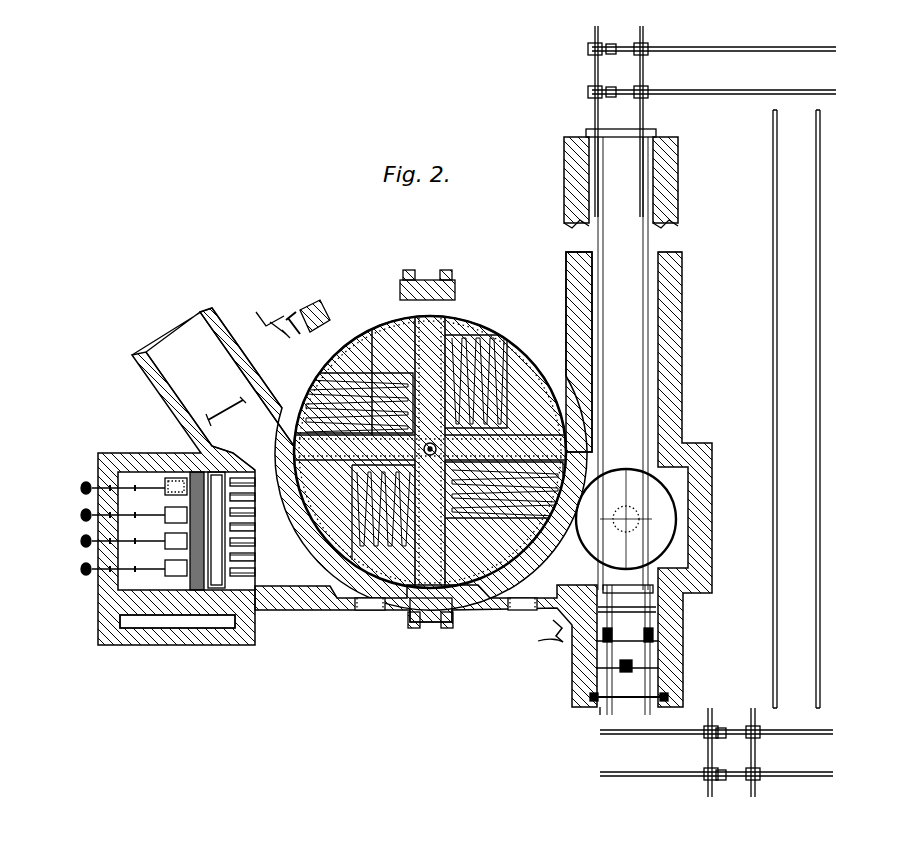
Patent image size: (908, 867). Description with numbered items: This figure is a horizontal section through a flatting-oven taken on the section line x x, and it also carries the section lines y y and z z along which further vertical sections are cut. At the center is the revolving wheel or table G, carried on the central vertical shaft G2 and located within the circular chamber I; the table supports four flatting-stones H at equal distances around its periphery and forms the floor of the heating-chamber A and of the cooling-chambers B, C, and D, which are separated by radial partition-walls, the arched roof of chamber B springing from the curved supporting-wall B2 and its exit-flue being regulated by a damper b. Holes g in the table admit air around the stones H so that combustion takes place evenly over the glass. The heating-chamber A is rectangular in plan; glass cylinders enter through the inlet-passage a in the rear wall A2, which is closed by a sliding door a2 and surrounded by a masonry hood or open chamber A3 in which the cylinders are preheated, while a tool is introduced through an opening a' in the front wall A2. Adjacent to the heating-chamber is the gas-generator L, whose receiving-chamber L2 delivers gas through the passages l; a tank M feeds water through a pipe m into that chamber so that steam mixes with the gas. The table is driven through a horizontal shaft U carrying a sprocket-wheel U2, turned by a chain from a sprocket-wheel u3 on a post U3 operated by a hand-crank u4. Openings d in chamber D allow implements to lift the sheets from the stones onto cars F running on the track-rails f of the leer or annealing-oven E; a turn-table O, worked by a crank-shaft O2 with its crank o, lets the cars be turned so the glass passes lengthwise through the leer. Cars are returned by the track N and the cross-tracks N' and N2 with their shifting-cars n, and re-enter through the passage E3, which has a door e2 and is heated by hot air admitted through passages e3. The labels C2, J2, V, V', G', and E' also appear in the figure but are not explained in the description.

The section line x x is at (860, 519).
The section line z z is at (369, 670).
The section line y y is at (611, 749).
The housing casing wall C2 is at (500, 318).
The cooling-chamber C is at (528, 332).
The circular chamber I is at (516, 548).
The cooling-chamber D is at (556, 536).
The flange J2 is at (436, 622).
The valve block V is at (403, 265).
The valve block V' is at (435, 452).
The wall of the heating-chamber A2 is at (290, 458).
The opening a' is at (361, 623).
The openings d is at (508, 612).
The heating-chamber A is at (193, 498).
The hood or open chamber A3 is at (213, 377).
The inlet-passage a is at (235, 451).
The sliding door a2 is at (226, 409).
The passages l is at (252, 548).
The pipe m is at (210, 530).
The damper b is at (196, 531).
The tank M is at (214, 590).
The shaft U is at (165, 492).
The sprocket-wheel U2 is at (176, 541).
The receiving-chamber L2 is at (128, 528).
The gas-generator L is at (83, 541).
The curved supporting-wall B2 is at (330, 310).
The post U3 is at (300, 309).
The hand-crank u4 is at (269, 315).
The sprocket-wheel u3 is at (278, 340).
The partition wall G' is at (430, 450).
The revolving wheel or table G is at (430, 461).
The holes g is at (502, 440).
The central vertical shaft G2 is at (424, 449).
The flatting-stones H is at (421, 447).
The cooling-chamber B is at (367, 367).
The cylinder wall E' is at (625, 479).
The leer or annealing-oven E is at (623, 269).
The track-rails f is at (603, 334).
The turn-table O is at (626, 519).
The cars F is at (600, 660).
The passages e3 is at (628, 690).
The passage E3 is at (668, 650).
The door e2 is at (605, 705).
The crank-shaft O2 is at (546, 629).
The crank o is at (545, 644).
The track N is at (781, 409).
The cross-track N' is at (712, 121).
The shifting-cars n is at (708, 748).
The cross-track N2 is at (663, 758).